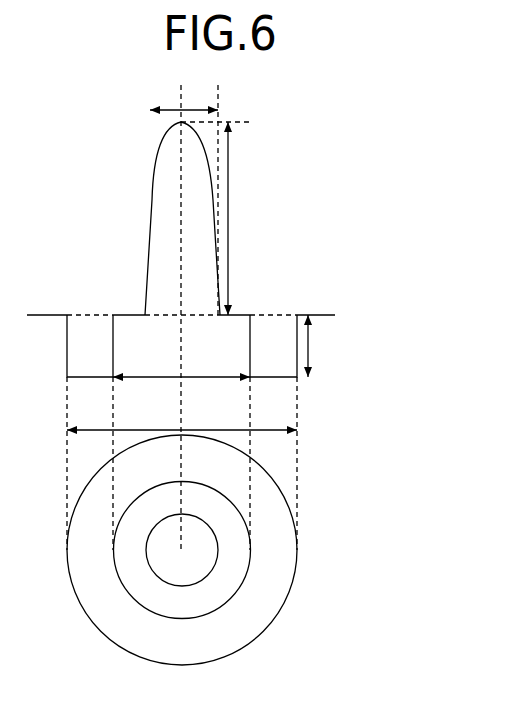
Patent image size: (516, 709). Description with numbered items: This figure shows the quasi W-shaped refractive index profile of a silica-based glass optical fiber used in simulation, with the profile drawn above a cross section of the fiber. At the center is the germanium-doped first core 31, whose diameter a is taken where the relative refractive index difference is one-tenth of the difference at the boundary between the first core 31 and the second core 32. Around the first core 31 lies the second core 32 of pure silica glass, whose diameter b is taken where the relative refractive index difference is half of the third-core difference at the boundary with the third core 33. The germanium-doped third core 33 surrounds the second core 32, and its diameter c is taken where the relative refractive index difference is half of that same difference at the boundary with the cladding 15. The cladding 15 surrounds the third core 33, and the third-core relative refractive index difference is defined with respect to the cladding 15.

The cladding 15 is at (204, 377).
The first core 31 is at (183, 570).
The second core 32 is at (232, 578).
The third core 33 is at (282, 570).